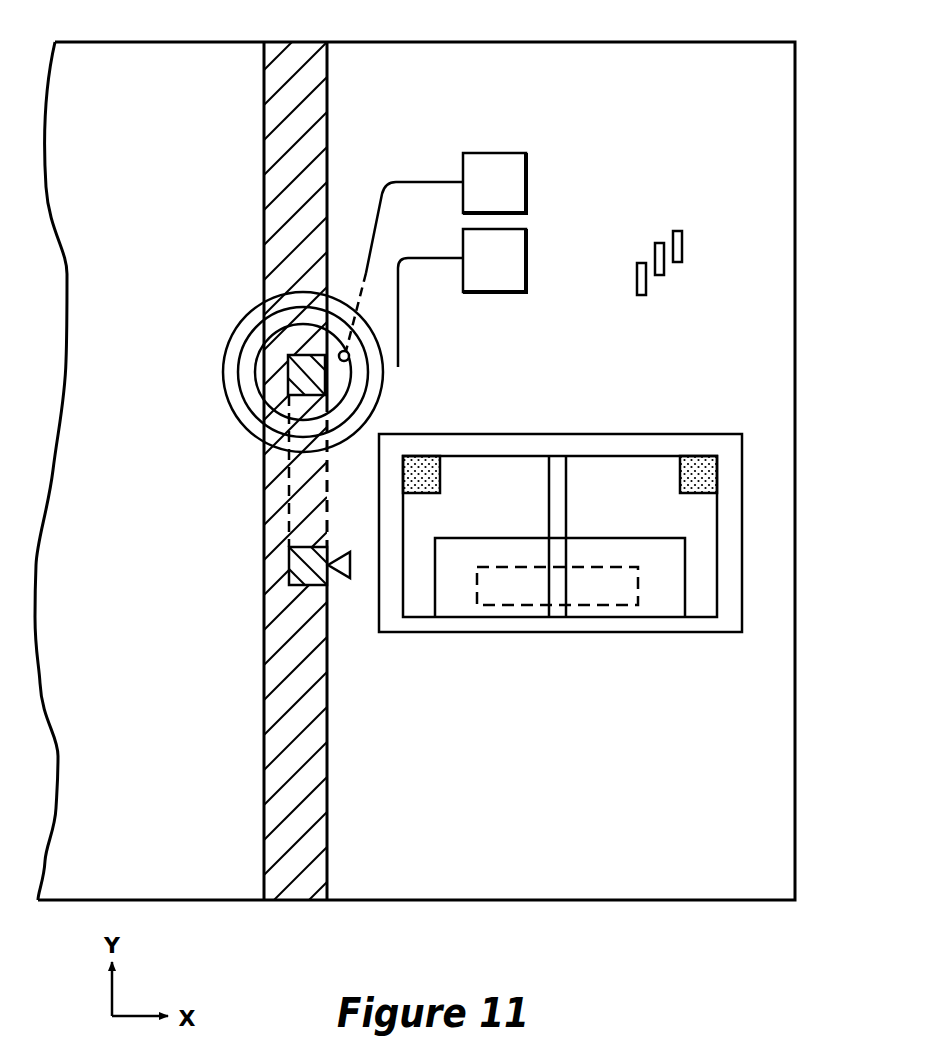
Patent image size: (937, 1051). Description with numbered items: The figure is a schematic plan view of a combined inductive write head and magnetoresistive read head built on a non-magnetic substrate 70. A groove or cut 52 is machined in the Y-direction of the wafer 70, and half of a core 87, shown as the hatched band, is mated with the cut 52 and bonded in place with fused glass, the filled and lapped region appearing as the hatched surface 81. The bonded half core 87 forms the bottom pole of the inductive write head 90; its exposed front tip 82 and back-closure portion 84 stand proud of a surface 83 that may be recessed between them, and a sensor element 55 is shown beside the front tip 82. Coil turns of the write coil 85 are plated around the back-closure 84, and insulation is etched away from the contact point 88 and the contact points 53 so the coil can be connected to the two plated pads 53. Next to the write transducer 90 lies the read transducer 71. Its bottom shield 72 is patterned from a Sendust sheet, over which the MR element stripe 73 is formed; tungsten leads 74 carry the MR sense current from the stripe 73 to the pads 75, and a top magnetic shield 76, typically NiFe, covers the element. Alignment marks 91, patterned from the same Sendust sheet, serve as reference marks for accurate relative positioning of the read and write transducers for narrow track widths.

The cut 52 is at (302, 50).
The contact points 53 is at (527, 240).
The sensor 55 is at (343, 580).
The non-magnetic substrate 70 is at (644, 928).
The read transducer 71 is at (560, 540).
The bottom shield 72 is at (449, 633).
The MR element stripe 73 is at (602, 593).
The leads 74 is at (588, 472).
The pads 75 is at (697, 463).
The top magnetic shield 76 is at (660, 602).
The hatched surface 81 is at (290, 740).
The front tip 82 is at (297, 572).
The surface 83 is at (303, 492).
The back-closure portion 84 is at (302, 377).
The write coil 85 is at (232, 347).
The core 87 is at (290, 472).
The contact point 88 is at (349, 358).
The inductive write head 90 is at (270, 359).
The alignment marks 91 is at (646, 293).